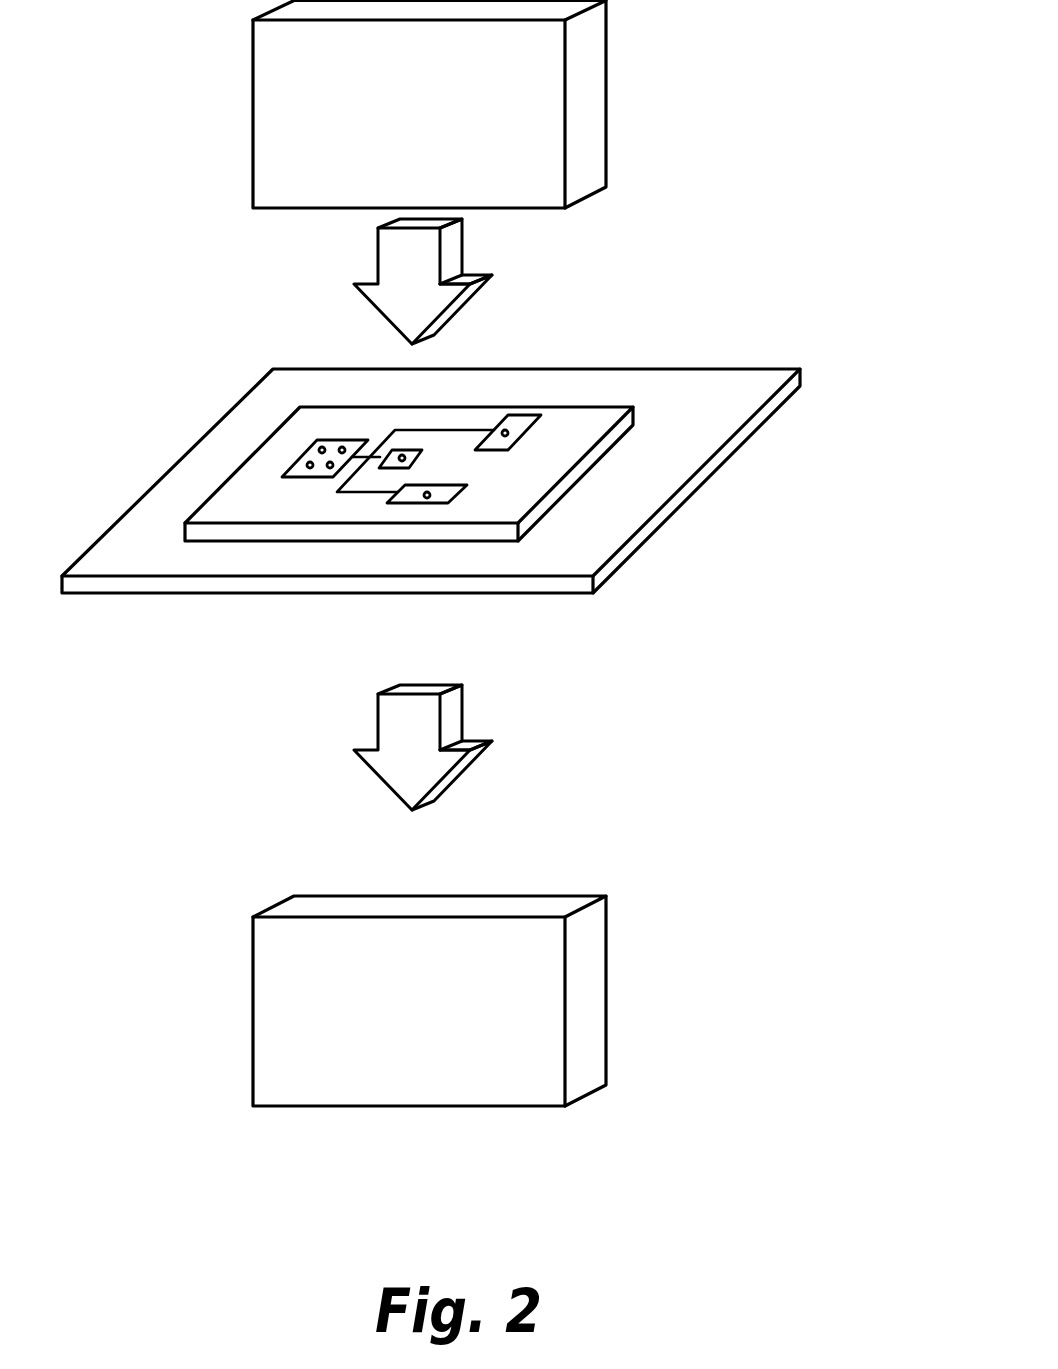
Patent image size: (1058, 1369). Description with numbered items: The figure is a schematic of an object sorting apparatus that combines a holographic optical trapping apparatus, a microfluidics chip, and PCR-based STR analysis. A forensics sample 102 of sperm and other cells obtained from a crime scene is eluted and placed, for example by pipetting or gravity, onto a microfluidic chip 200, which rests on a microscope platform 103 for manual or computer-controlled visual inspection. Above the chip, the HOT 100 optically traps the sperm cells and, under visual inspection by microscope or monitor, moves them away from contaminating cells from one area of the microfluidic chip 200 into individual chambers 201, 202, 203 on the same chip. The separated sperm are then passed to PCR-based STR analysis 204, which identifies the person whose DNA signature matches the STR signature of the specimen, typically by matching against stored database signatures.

The holographic optical trapping apparatus 100 is at (603, 101).
The forensics sample 102 is at (307, 450).
The microscope platform 103 is at (733, 370).
The microfluidic chip 200 is at (562, 488).
The individual chamber 201 is at (415, 503).
The individual chamber 202 is at (403, 453).
The individual chamber 203 is at (538, 420).
The PCR-based STR analysis 204 is at (592, 982).